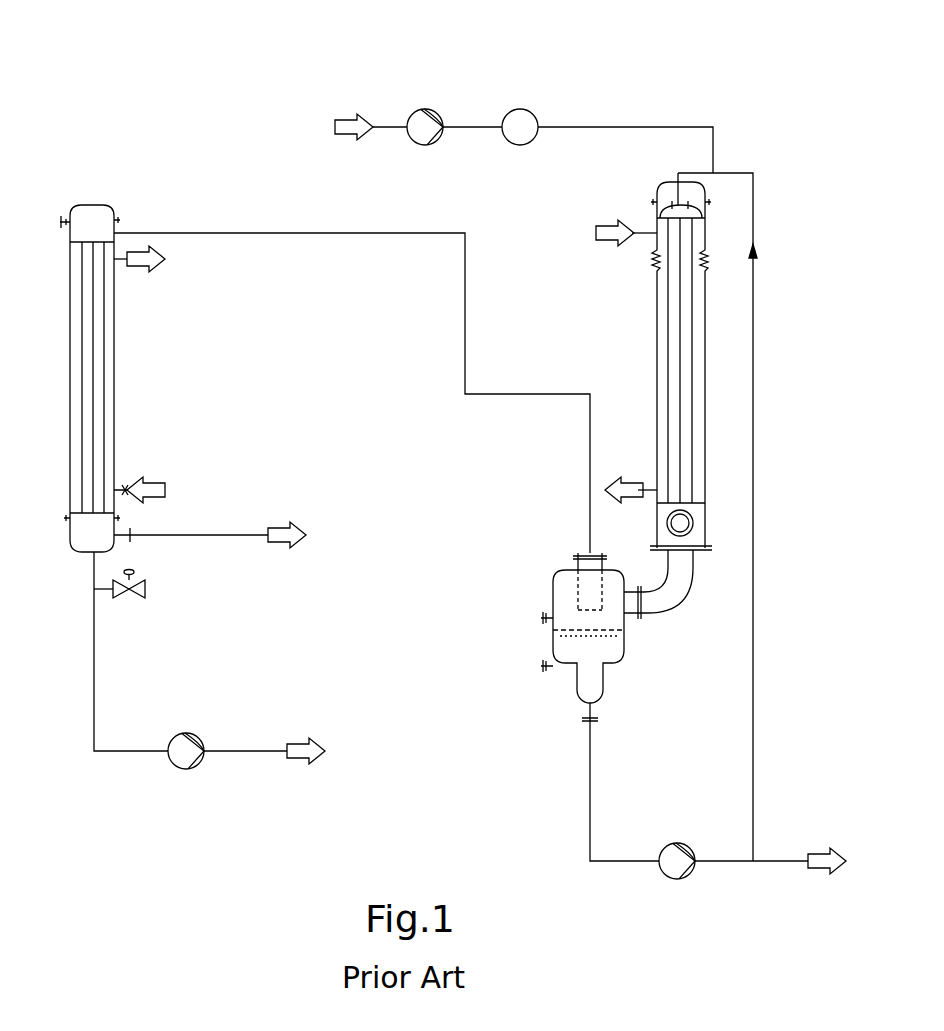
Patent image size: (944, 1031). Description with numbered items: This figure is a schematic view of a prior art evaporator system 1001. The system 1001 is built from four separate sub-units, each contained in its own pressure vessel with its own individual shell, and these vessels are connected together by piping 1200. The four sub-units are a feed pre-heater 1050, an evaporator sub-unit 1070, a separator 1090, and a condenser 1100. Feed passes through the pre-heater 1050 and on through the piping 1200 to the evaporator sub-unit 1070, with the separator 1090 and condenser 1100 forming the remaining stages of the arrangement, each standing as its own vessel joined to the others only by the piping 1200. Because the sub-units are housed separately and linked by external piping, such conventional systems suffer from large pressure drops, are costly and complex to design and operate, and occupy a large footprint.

The evaporator system 1001 is at (347, 70).
The feed pre-heater 1050 is at (521, 108).
The piping 1200 is at (714, 148).
The condenser 1100 is at (115, 385).
The evaporator sub-unit 1070 is at (657, 362).
The separator 1090 is at (578, 592).